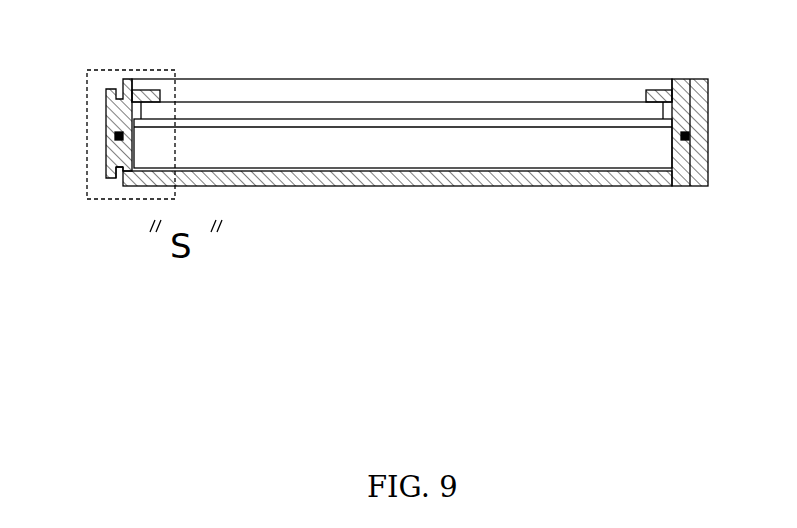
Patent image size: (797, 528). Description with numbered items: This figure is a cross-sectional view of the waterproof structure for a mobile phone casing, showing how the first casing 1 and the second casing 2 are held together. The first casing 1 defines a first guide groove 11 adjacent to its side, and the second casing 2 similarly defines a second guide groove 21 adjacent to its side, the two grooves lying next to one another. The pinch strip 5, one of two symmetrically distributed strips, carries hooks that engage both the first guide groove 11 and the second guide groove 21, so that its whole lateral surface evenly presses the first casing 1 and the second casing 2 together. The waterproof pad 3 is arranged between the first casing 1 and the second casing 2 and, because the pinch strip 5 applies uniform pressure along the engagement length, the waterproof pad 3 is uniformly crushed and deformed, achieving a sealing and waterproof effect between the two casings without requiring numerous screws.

The first casing 1 is at (124, 84).
The first guide groove 11 is at (118, 90).
The second casing 2 is at (617, 178).
The second guide groove 21 is at (119, 172).
The waterproof pad 3 is at (113, 134).
The pinch strip 5 is at (708, 112).